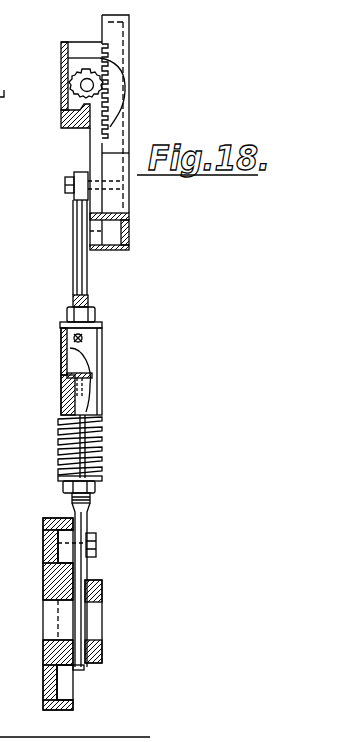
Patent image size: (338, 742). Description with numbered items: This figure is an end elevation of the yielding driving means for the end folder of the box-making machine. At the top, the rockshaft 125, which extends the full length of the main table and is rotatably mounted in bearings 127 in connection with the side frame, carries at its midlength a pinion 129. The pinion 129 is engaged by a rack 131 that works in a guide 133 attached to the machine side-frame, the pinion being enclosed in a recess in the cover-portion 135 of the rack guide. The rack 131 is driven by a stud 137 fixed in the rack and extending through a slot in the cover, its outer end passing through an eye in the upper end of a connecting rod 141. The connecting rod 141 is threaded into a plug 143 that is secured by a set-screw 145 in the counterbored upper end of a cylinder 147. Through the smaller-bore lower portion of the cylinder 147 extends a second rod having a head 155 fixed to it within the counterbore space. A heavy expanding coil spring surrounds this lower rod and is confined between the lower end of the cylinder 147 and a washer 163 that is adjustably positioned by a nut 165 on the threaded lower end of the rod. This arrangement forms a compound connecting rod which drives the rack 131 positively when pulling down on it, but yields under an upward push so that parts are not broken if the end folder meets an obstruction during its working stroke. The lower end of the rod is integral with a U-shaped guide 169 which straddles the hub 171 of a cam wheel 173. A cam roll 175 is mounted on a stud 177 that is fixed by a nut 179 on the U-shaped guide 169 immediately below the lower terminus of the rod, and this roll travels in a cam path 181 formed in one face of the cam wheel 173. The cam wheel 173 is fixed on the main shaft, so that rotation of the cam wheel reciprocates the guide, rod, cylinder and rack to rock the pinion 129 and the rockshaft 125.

The rockshaft 125 is at (77, 89).
The bearings 127 is at (66, 146).
The pinion 129 is at (89, 79).
The rack 131 is at (117, 84).
The guide 133 is at (131, 33).
The cover-portion 135 is at (62, 118).
The stud 137 is at (66, 184).
The connecting rod 141 is at (89, 296).
The plug 143 is at (68, 352).
The set-screw 145 is at (102, 344).
The cylinder 147 is at (62, 372).
The head 155 is at (64, 376).
The washer 163 is at (102, 472).
The nut 165 is at (96, 487).
The U-shaped guide 169 is at (88, 525).
The hub 171 is at (102, 583).
The cam wheel 173 is at (44, 585).
The cam roll 175 is at (72, 520).
The stud 177 is at (45, 565).
The nut 179 is at (96, 545).
The cam path 181 is at (72, 690).